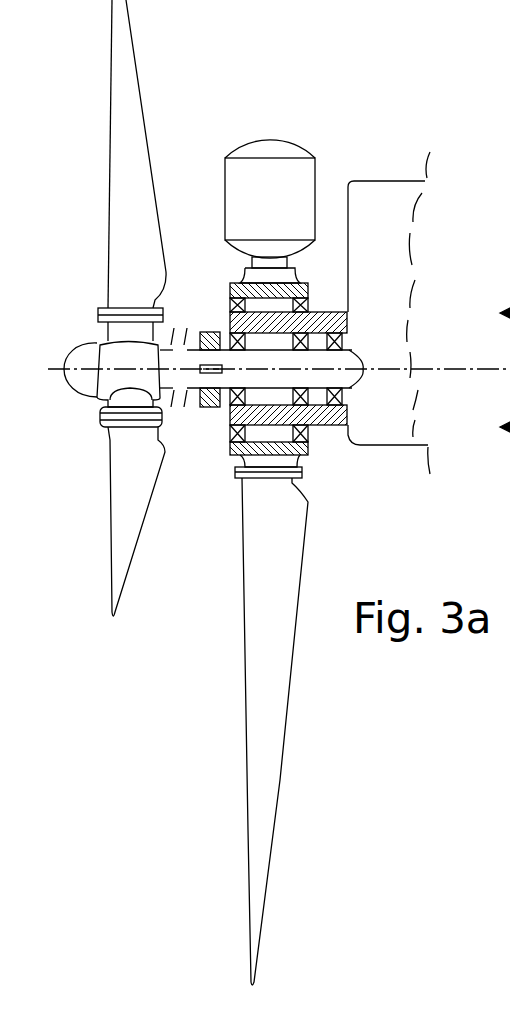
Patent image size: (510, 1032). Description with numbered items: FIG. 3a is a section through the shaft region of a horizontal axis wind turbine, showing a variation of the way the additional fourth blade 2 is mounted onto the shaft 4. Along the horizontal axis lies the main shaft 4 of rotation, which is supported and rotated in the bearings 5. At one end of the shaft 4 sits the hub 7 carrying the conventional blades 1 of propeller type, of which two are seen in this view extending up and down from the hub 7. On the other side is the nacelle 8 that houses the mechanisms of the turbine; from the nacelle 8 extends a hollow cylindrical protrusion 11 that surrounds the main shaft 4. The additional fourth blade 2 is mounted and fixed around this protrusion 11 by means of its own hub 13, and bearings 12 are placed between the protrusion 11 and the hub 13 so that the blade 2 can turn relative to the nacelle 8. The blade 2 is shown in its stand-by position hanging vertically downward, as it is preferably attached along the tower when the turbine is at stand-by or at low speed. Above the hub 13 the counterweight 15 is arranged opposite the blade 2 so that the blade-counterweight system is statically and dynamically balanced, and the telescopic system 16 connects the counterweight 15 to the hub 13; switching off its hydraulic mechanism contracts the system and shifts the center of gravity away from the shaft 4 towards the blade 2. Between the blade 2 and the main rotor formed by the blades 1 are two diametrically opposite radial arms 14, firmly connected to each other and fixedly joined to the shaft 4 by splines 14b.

The conventional blades 1 is at (113, 62).
The additional fourth blade 2 is at (248, 780).
The shaft 4 is at (353, 378).
The bearings 5 is at (340, 393).
The hub 7 is at (77, 350).
The nacelle 8 is at (373, 180).
The hollow cylindrical protrusion 11 is at (348, 310).
The bearings 12 is at (312, 302).
The hub 13 is at (298, 277).
The radial arms 14 is at (202, 395).
The splines 14b is at (202, 369).
The counterweight 15 is at (315, 167).
The telescopic system 16 is at (288, 260).